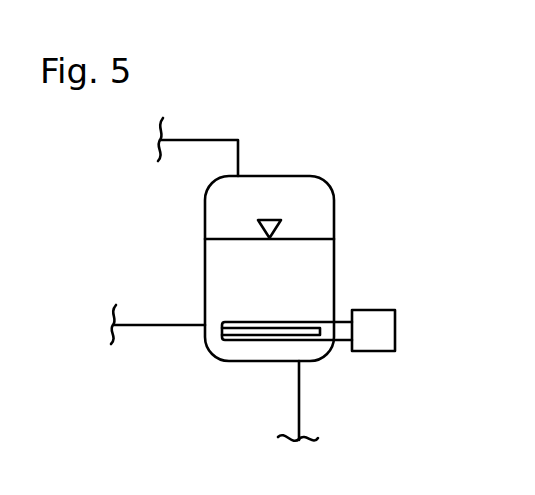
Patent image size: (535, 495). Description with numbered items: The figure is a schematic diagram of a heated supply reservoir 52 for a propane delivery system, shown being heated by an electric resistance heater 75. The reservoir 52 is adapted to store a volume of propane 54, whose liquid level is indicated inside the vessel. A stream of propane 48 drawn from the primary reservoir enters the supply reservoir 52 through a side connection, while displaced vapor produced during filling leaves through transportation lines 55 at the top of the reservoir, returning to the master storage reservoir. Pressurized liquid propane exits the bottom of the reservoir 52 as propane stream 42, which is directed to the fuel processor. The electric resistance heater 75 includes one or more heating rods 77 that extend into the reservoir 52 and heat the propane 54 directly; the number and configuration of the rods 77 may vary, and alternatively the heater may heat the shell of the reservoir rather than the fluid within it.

The propane stream 42 is at (300, 387).
The stream of propane 48 is at (140, 324).
The supply reservoir 52 is at (293, 172).
The volume of propane 54 is at (320, 282).
The transportation lines 55 is at (181, 139).
The electric resistance heater 75 is at (395, 322).
The heating rods 77 is at (244, 321).